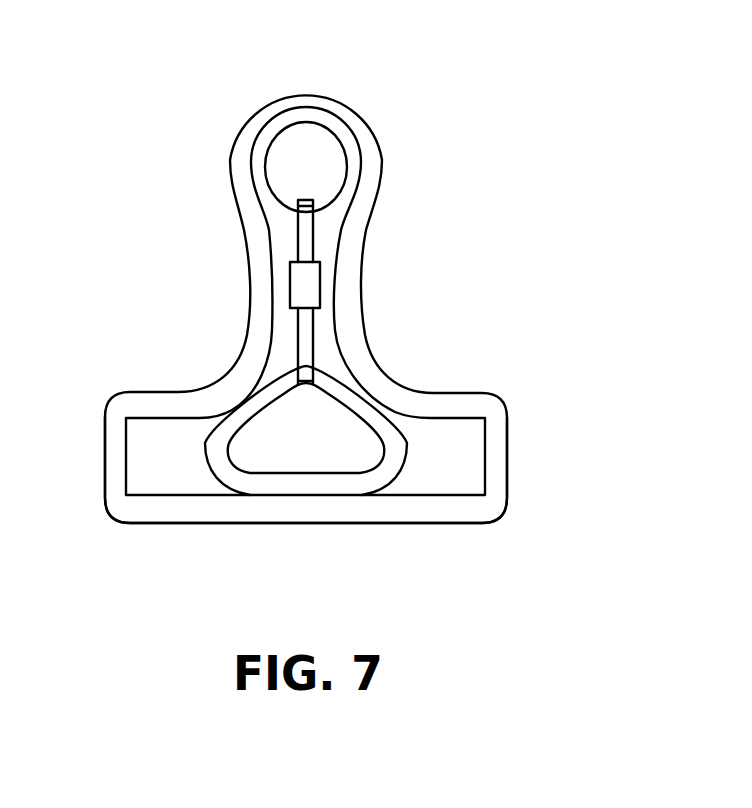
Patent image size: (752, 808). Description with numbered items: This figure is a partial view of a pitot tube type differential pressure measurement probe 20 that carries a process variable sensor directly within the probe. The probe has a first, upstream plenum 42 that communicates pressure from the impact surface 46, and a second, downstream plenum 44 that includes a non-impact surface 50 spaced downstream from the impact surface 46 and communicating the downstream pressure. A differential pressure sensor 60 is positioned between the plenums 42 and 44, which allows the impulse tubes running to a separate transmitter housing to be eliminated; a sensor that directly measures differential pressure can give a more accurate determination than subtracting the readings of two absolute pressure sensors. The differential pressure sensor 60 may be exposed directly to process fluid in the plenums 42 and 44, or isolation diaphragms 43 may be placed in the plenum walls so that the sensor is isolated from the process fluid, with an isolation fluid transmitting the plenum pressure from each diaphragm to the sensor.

The differential pressure measurement probe 20 is at (426, 252).
The first plenum 42 is at (317, 455).
The isolation diaphragms 43 is at (308, 205).
The second plenum 44 is at (302, 155).
The impact surface 46 is at (410, 523).
The non-impact surface 50 is at (478, 392).
The differential pressure sensor 60 is at (290, 292).